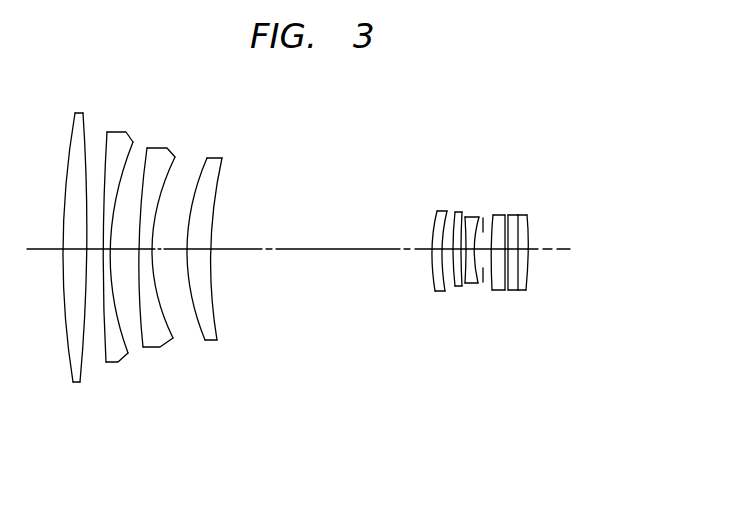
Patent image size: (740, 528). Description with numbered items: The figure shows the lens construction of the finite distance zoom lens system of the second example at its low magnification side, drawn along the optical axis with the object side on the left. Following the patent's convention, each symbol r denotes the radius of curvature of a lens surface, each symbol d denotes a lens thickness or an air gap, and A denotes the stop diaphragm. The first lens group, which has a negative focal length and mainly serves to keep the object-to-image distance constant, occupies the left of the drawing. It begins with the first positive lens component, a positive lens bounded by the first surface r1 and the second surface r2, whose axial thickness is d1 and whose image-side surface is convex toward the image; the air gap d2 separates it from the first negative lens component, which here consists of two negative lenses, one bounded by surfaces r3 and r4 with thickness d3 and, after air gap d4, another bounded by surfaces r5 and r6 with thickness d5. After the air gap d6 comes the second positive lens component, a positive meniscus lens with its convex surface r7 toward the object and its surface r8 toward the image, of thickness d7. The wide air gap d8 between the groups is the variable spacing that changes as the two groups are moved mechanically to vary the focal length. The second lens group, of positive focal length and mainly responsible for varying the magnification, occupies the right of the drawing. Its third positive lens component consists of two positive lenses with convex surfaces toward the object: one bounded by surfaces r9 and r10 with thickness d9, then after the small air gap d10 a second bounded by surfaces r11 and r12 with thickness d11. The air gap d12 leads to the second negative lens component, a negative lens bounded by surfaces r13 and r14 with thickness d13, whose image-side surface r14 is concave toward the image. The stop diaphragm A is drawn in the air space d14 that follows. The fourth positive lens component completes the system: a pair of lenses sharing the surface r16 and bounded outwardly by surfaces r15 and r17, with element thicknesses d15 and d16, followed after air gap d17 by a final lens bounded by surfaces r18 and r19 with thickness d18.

The radius of curvature of first lens surface r1 is at (73, 125).
The radius of curvature of second lens surface r2 is at (87, 125).
The radius of curvature of third lens surface r3 is at (108, 132).
The radius of curvature of fourth lens surface r4 is at (132, 142).
The radius of curvature of fifth lens surface r5 is at (148, 148).
The radius of curvature of sixth lens surface r6 is at (175, 157).
The radius of curvature of seventh lens surface r7 is at (208, 158).
The radius of curvature of eighth lens surface r8 is at (222, 158).
The radius of curvature of ninth lens surface r9 is at (437, 211).
The radius of curvature of tenth lens surface r10 is at (447, 211).
The radius of curvature of eleventh lens surface r11 is at (455, 212).
The radius of curvature of twelfth lens surface r12 is at (461, 212).
The radius of curvature of thirteenth lens surface r13 is at (465, 217).
The radius of curvature of fourteenth lens surface r14 is at (478, 217).
The radius of curvature of fifteenth lens surface r15 is at (494, 215).
The radius of curvature of sixteenth lens surface r16 is at (505, 215).
The radius of curvature of seventeenth lens surface r17 is at (510, 215).
The radius of curvature of eighteenth lens surface r18 is at (518, 215).
The radius of curvature of nineteenth lens surface r19 is at (527, 215).
The stop diaphragm A is at (483, 220).
The lens thickness of first lens d1 is at (75, 250).
The air gap between first and second lenses d2 is at (95, 251).
The lens thickness of second lens d3 is at (106, 251).
The air gap between second and third lenses d4 is at (126, 251).
The lens thickness of third lens d5 is at (145, 251).
The air gap between third and fourth lenses d6 is at (172, 251).
The lens thickness of fourth lens d7 is at (199, 251).
The variable air gap between first and second lens groups d8 is at (310, 252).
The lens thickness of fifth lens d9 is at (436, 252).
The air gap between fifth and sixth lenses d10 is at (448, 262).
The lens thickness of sixth lens d11 is at (458, 288).
The air gap between sixth and seventh lenses d12 is at (463, 285).
The lens thickness of seventh lens d13 is at (470, 285).
The air gap between seventh and eighth lenses d14 is at (485, 275).
The lens thickness of eighth lens d15 is at (498, 292).
The lens thickness of ninth lens d16 is at (507, 292).
The air gap between ninth and tenth lenses d17 is at (513, 292).
The lens thickness of tenth lens d18 is at (523, 292).